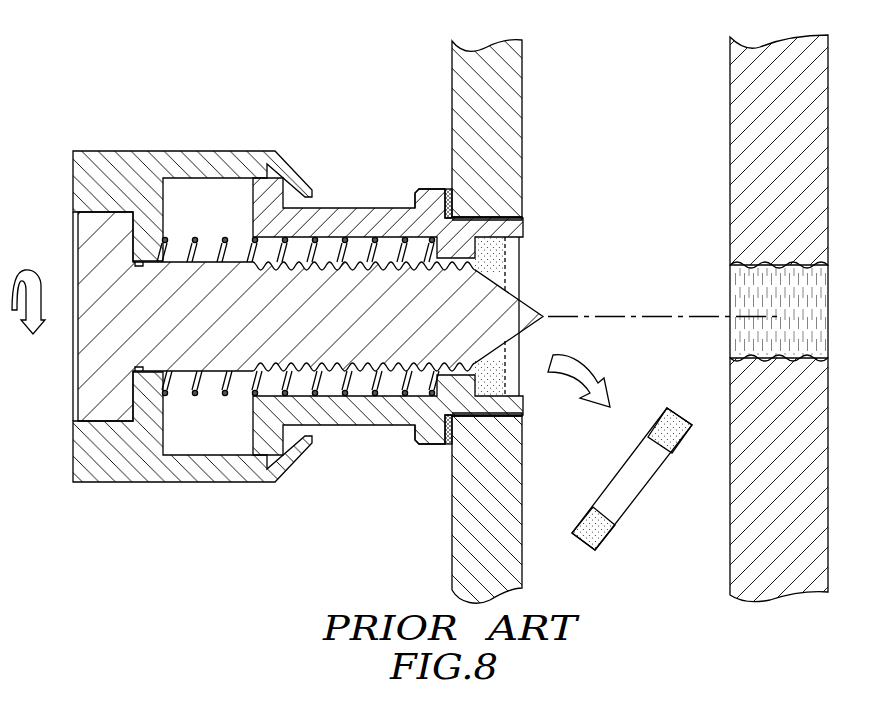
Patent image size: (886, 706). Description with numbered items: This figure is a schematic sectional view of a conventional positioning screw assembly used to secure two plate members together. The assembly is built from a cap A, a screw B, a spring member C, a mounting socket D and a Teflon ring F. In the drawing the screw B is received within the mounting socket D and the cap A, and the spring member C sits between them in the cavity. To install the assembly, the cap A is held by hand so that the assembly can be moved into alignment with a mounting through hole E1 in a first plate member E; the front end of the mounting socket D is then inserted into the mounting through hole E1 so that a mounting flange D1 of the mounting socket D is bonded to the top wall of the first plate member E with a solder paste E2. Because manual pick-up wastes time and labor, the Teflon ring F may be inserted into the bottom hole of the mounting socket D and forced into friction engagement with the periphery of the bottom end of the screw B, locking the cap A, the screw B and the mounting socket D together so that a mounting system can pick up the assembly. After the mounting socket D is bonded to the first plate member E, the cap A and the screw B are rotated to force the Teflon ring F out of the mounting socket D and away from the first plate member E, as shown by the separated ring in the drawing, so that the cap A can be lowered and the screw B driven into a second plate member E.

The cap A is at (133, 137).
The screw B is at (88, 362).
The spring member C is at (225, 238).
The mounting socket D is at (378, 428).
The mounting flange D1 is at (430, 445).
The plate member E is at (518, 50).
The mounting through hole E1 is at (516, 215).
The solder paste E2 is at (448, 190).
The Teflon ring F is at (497, 262).